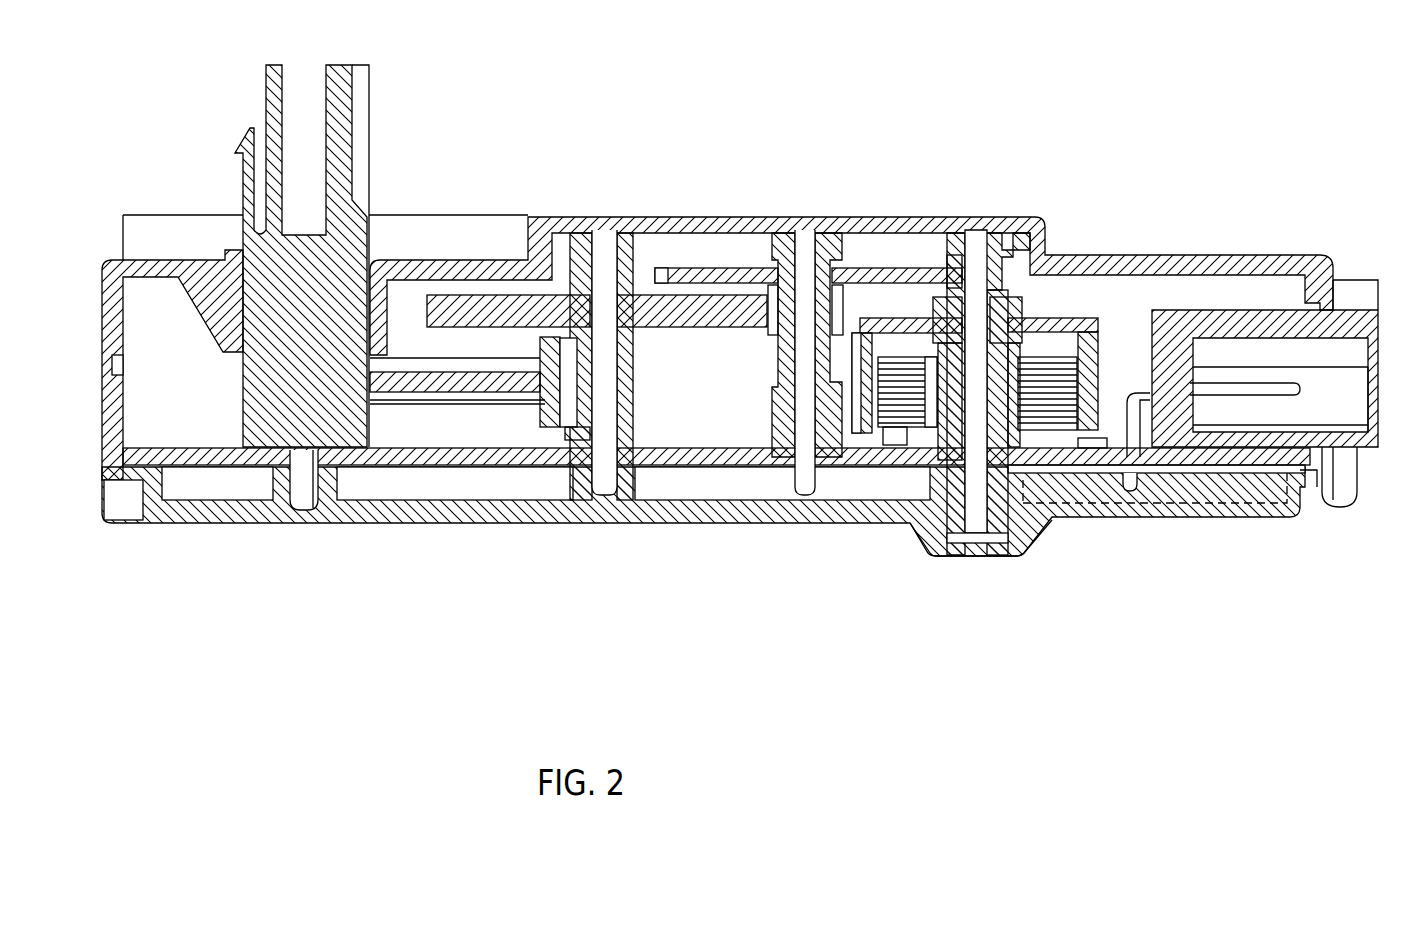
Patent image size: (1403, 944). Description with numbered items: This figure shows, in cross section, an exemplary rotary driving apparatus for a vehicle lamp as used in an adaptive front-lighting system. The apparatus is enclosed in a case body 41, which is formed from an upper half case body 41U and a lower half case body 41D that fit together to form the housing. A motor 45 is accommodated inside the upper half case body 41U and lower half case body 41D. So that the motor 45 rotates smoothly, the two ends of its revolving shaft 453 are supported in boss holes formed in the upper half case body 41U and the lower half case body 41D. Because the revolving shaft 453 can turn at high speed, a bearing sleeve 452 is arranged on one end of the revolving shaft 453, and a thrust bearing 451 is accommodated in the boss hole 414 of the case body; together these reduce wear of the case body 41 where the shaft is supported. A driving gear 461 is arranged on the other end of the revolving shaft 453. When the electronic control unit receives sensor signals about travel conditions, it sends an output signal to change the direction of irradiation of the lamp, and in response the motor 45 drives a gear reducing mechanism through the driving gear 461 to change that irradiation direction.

The case body 41 is at (751, 389).
The upper half case body 41U is at (1242, 255).
The lower half case body 41D is at (1292, 518).
The motor 45 is at (1098, 298).
The driving gear 461 is at (1016, 240).
The boss hole 414 is at (910, 557).
The thrust bearing 451 is at (992, 560).
The bearing sleeve 452 is at (1045, 560).
The revolving shaft 453 is at (962, 560).